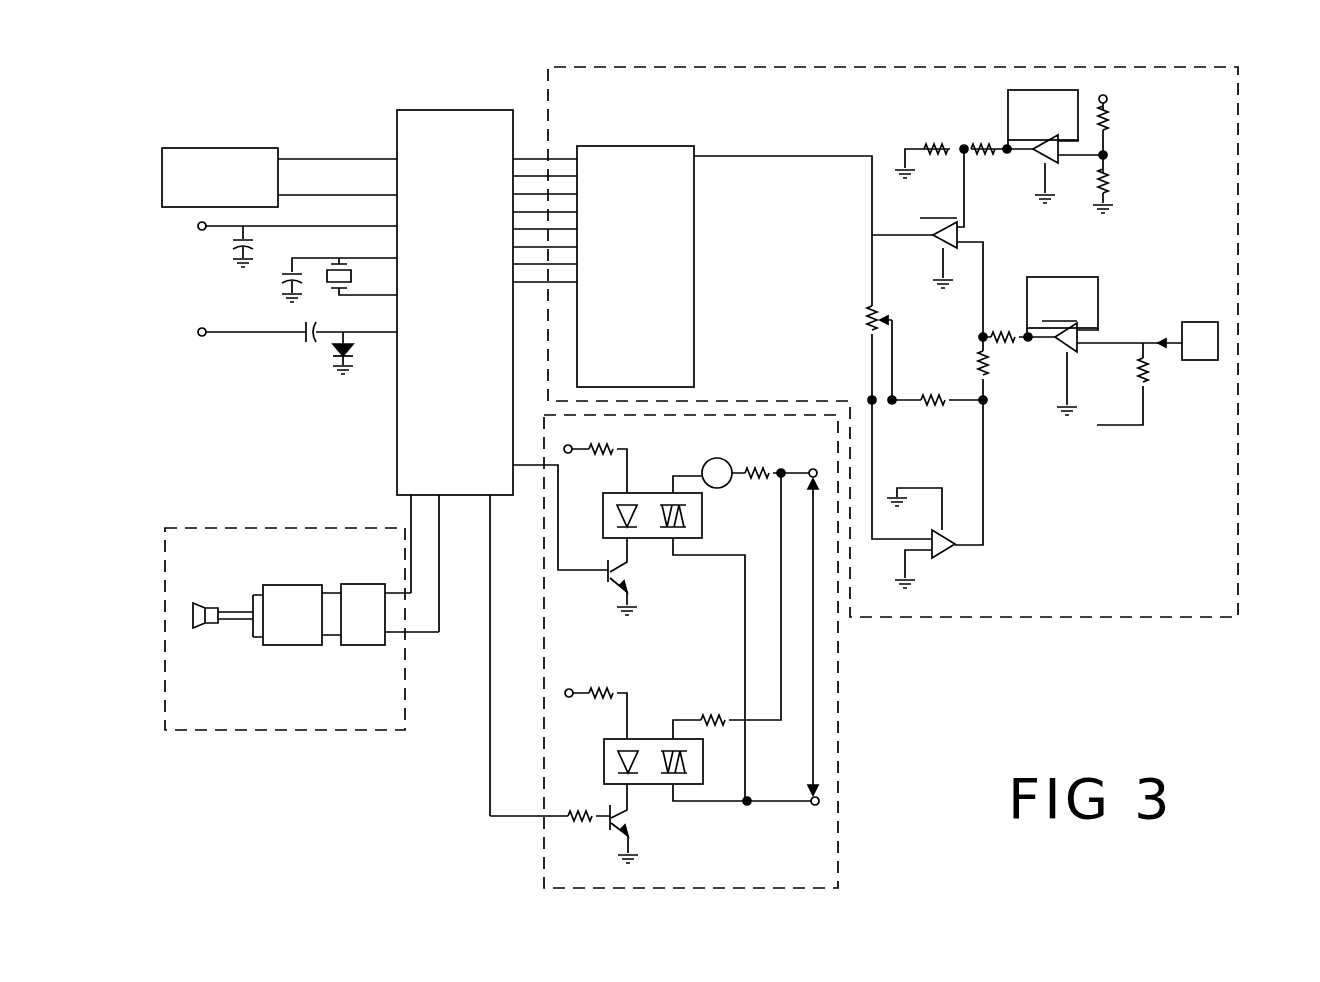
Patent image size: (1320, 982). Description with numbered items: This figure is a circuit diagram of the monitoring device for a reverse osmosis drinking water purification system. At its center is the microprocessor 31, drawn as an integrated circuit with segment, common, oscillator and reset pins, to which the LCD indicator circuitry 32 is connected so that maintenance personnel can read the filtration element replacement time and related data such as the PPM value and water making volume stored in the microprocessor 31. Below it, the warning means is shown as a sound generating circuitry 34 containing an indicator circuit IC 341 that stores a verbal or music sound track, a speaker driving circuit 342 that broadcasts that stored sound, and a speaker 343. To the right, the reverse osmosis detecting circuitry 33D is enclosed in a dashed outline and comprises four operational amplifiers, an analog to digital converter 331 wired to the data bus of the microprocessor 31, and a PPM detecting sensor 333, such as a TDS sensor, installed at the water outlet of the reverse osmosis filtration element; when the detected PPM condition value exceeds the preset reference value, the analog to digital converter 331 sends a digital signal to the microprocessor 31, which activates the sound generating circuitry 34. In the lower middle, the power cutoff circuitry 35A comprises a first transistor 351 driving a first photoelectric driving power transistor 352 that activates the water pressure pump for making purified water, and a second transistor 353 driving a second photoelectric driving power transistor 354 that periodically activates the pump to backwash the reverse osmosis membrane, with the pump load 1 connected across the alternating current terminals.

The microprocessor 31 is at (465, 110).
The LCD indicator circuitry 32 is at (220, 150).
The sound generating circuitry 34 is at (302, 589).
The indicator circuit IC 341 is at (375, 640).
The speaker driving circuit 342 is at (294, 640).
The speaker 343 is at (203, 600).
The analog to digital converter 331 is at (676, 239).
The PPM detecting sensor 333 is at (1203, 343).
The reverse osmosis detecting circuitry 33D is at (934, 387).
The power cutoff circuitry 35A is at (718, 651).
The first transistor 351 is at (626, 590).
The first photoelectric driving power transistor 352 is at (650, 535).
The second transistor 353 is at (640, 837).
The second photoelectric driving power transistor 354 is at (650, 775).
The heater 1 is at (720, 462).